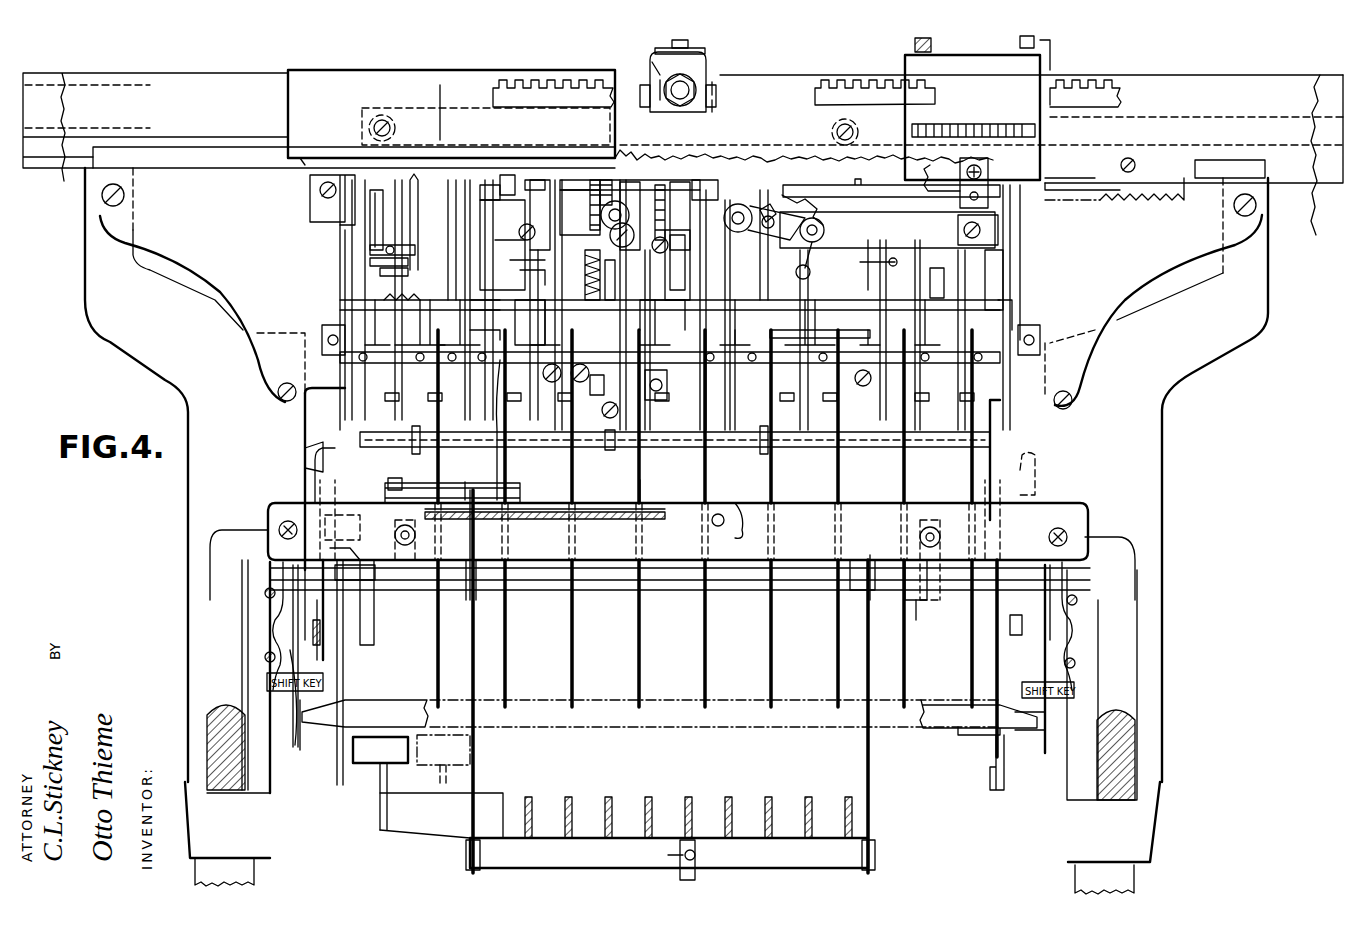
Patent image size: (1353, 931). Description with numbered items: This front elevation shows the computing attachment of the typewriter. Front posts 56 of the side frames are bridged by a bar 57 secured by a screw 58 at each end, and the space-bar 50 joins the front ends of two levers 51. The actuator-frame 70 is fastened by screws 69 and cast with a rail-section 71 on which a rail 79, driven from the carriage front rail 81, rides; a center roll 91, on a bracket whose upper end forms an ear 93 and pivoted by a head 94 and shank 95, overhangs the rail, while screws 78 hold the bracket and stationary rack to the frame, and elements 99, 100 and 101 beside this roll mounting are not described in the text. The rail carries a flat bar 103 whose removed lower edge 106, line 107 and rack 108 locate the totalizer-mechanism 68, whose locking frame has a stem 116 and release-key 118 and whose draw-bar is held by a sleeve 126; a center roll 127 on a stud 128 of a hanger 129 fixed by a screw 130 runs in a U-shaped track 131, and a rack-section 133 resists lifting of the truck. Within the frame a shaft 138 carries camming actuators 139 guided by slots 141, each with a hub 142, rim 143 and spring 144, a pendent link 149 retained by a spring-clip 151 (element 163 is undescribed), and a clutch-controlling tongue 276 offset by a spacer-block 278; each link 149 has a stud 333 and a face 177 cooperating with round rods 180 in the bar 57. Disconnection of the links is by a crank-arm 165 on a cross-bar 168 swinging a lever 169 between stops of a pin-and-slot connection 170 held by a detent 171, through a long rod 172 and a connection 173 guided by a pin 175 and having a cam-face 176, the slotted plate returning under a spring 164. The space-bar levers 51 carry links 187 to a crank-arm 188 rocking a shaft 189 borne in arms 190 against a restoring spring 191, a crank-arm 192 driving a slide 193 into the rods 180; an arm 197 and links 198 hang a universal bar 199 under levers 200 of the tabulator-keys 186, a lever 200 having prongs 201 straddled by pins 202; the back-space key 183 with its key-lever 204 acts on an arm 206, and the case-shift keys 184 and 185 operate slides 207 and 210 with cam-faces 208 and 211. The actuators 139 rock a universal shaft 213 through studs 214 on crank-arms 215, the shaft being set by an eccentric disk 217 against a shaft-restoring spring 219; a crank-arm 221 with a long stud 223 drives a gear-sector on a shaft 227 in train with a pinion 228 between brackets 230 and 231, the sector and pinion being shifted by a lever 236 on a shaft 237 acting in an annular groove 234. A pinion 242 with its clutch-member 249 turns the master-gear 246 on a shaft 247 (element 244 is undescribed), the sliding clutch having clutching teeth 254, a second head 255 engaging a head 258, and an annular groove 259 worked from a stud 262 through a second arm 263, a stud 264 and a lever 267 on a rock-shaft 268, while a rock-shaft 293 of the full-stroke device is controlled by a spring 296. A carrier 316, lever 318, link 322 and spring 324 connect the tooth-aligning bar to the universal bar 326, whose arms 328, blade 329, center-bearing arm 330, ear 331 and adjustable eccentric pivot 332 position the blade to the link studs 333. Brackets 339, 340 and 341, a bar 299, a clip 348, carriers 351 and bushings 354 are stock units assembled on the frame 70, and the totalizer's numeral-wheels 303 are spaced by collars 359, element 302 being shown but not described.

The key lever plate 50 is at (669, 717).
The key lever 51 is at (337, 785).
The frame side plate 56 is at (672, 665).
The cross bar 57 is at (679, 546).
The screw 58 is at (278, 525).
The housing 68 is at (972, 117).
The screw 69 is at (100, 200).
The frame plate 70 is at (918, 385).
The carriage rail 71 is at (679, 162).
The bearing block 78 is at (706, 65).
The carriage bar 79 is at (936, 155).
The carriage rail 81 is at (155, 127).
The pin 91 is at (660, 80).
The arm 93 is at (655, 58).
The bushing 94 is at (668, 105).
The shaft 95 is at (686, 105).
The cap 99 is at (682, 35).
The lug 100 is at (714, 110).
The lug 101 is at (712, 85).
The carriage plate 103 is at (451, 114).
The edge 106 is at (300, 160).
The guide 107 is at (440, 105).
The rack 108 is at (535, 80).
The arm 116 is at (1045, 45).
The stop 118 is at (1020, 42).
The key 126 is at (915, 46).
The bracket 127 is at (942, 176).
The pivot 128 is at (962, 198).
The screw 129 is at (988, 175).
The lever 130 is at (972, 160).
The bar 131 is at (878, 185).
The rack 133 is at (1138, 196).
The slide 138 is at (945, 275).
The rod 139 is at (352, 178).
The bar 141 is at (905, 255).
The bracket 142 is at (1003, 288).
The spring 143 is at (950, 280).
The screw block 144 is at (966, 230).
The key lever rod 149 is at (705, 460).
The pawl 151 is at (495, 243).
The stud 163 is at (395, 478).
The bar 164 is at (465, 482).
The link 165 is at (820, 252).
The bar 168 is at (880, 212).
The lever 169 is at (788, 208).
The arm 170 is at (832, 215).
The pin 171 is at (770, 230).
The lever 172 is at (745, 232).
The rod 173 is at (738, 405).
The pin 175 is at (712, 522).
The hook 176 is at (753, 520).
The rod 177 is at (640, 490).
The universal bar 180 is at (610, 515).
The bracket 183 is at (358, 566).
The shift key lever 184 is at (1040, 672).
The link 185 is at (294, 713).
The space bar 186 is at (380, 750).
The rod 187 is at (365, 790).
The bracket 188 is at (667, 520).
The rail 189 is at (652, 590).
The block 190 is at (648, 602).
The nut 191 is at (947, 560).
The rod 192 is at (468, 592).
The nut 193 is at (466, 545).
The bracket 197 is at (872, 560).
The rod 198 is at (476, 770).
The bar 199 is at (560, 868).
The comb 200 is at (648, 797).
The block 201 is at (692, 872).
The pin 202 is at (668, 856).
The pin 204 is at (305, 632).
The lever 206 is at (330, 670).
The lever 207 is at (1052, 580).
The lug 208 is at (1035, 500).
The lever 210 is at (293, 578).
The lug 211 is at (312, 480).
The bar 213 is at (420, 363).
The bracket 214 is at (822, 300).
The bar 215 is at (830, 337).
The block 217 is at (660, 400).
The pin 219 is at (875, 325).
The link 221 is at (500, 362).
The plate 223 is at (535, 310).
The lug 227 is at (500, 285).
The stop 228 is at (530, 178).
The lever 230 is at (505, 333).
The screws 231 is at (570, 373).
The block 234 is at (510, 175).
The lever 236 is at (518, 272).
The plate 237 is at (518, 228).
The slide 242 is at (545, 178).
The arm 244 is at (510, 258).
The slide 246 is at (690, 185).
The plate 247 is at (580, 212).
The rack 249 is at (595, 178).
The rack 254 is at (608, 178).
The gear 255 is at (625, 205).
The rack 258 is at (665, 185).
The slide 259 is at (630, 180).
The screw 262 is at (612, 240).
The screw 263 is at (652, 250).
The slide 264 is at (674, 265).
The bracket 267 is at (664, 315).
The pin 268 is at (400, 272).
The rod 276 is at (378, 220).
The rod 278 is at (435, 178).
The pin 293 is at (403, 258).
The pin 296 is at (884, 265).
The bar 299 is at (565, 180).
The block 302 is at (718, 185).
The teeth 303 is at (930, 122).
The spring 316 is at (586, 275).
The rod 318 is at (610, 290).
The screw 322 is at (598, 413).
The lug 324 is at (595, 395).
The shaft 326 is at (362, 452).
The plate 328 is at (990, 452).
The rod 329 is at (475, 432).
The lug 330 is at (660, 450).
The lug 331 is at (612, 450).
The lug 332 is at (605, 440).
The lug 333 is at (430, 402).
The bar 339 is at (343, 290).
The screw 340 is at (862, 388).
The bracket 341 is at (1022, 315).
The pin 348 is at (715, 192).
The bracket 351 is at (345, 245).
The bracket 354 is at (322, 328).
The pin 359 is at (1022, 122).